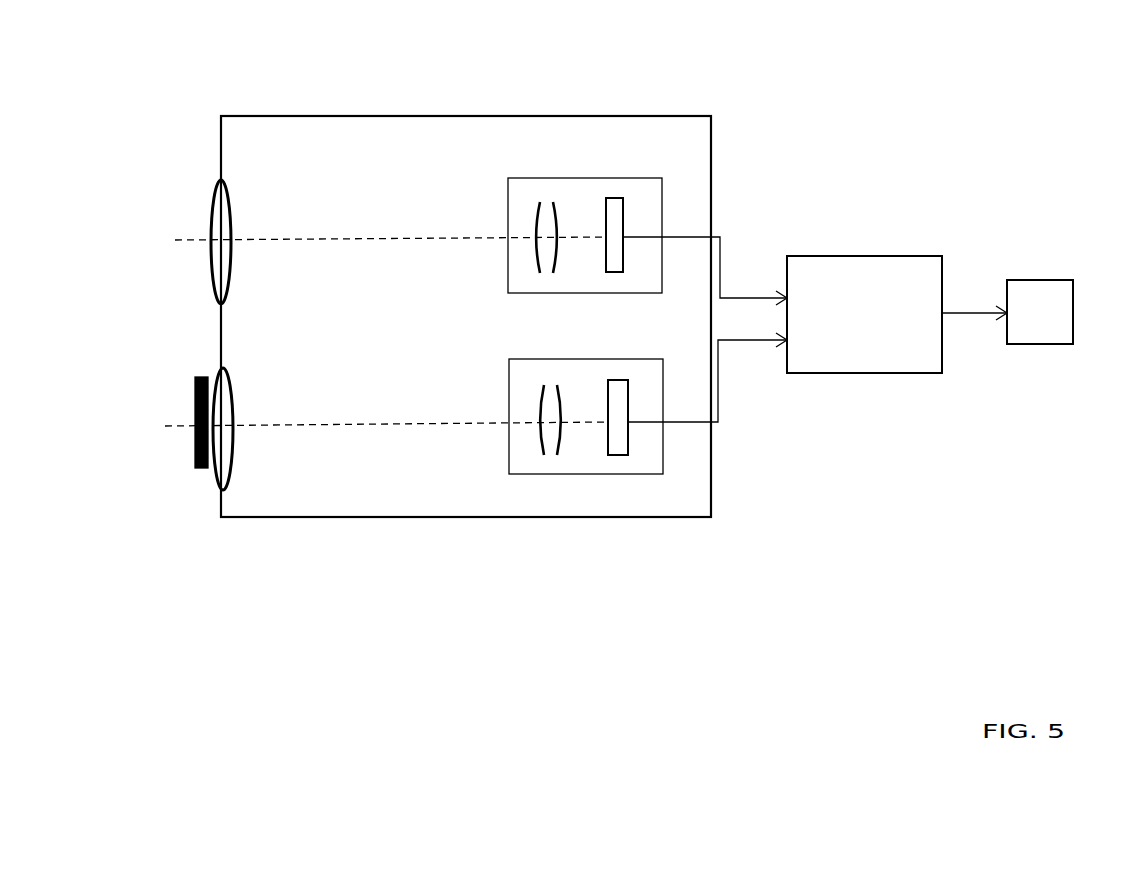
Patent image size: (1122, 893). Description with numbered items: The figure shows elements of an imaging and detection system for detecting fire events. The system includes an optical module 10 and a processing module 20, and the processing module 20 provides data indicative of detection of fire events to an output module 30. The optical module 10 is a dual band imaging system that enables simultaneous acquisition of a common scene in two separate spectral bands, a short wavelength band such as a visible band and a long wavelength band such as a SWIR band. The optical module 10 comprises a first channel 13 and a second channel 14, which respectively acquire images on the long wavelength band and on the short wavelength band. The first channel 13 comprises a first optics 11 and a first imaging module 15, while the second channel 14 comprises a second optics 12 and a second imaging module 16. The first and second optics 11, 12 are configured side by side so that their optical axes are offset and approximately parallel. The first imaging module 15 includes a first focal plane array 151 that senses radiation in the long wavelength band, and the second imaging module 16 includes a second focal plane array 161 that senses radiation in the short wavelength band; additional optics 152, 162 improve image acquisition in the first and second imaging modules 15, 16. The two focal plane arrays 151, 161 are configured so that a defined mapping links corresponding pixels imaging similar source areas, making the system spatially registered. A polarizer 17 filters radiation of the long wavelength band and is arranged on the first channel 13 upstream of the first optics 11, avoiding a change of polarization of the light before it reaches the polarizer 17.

The optical module 10 is at (265, 520).
The first optics 11 is at (215, 373).
The second optics 12 is at (212, 218).
The first channel 13 is at (376, 412).
The second channel 14 is at (425, 229).
The first imaging module 15 is at (624, 359).
The second imaging module 16 is at (512, 178).
The polarizer 17 is at (195, 466).
The first focal plane array 151 is at (620, 458).
The additional optics 152 is at (553, 455).
The second focal plane array 161 is at (615, 197).
The additional optics 162 is at (545, 200).
The processing module 20 is at (830, 256).
The output module 30 is at (1048, 280).